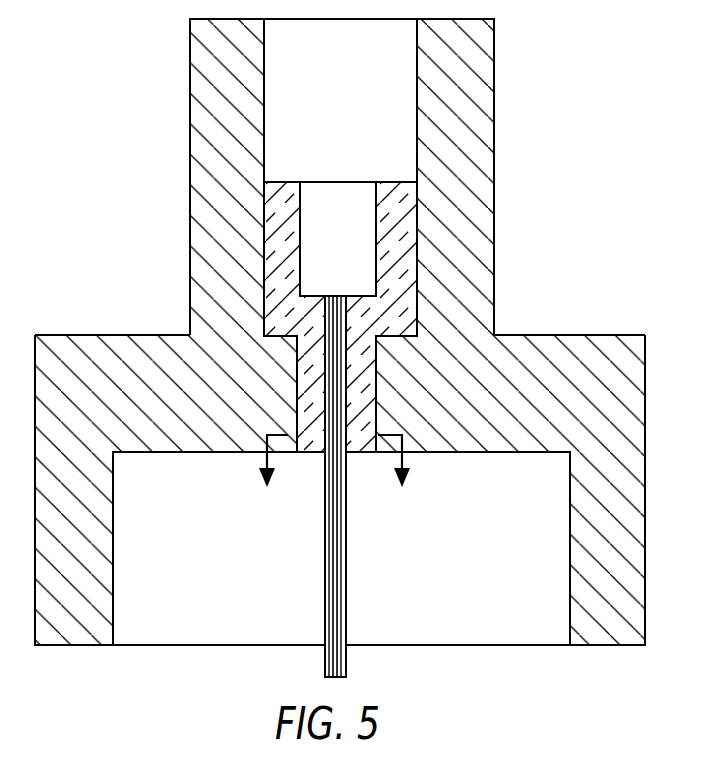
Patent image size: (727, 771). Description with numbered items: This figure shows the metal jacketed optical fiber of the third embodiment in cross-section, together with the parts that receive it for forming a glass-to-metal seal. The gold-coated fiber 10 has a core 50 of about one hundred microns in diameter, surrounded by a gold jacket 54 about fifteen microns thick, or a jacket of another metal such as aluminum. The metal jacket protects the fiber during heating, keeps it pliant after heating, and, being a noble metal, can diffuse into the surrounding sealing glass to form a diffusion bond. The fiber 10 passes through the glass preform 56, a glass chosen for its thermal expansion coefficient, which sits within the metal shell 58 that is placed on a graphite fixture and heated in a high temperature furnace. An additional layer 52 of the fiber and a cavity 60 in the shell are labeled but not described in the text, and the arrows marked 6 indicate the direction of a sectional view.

The gold-coated fiber 10 is at (279, 447).
The core 50 is at (336, 576).
The fiber cladding 52 is at (333, 603).
The gold jacket 54 is at (347, 555).
The glass preform 56 is at (413, 278).
The metal shell 58 is at (494, 122).
The cavity 60 is at (343, 198).
The section line 6- 6 is at (334, 479).